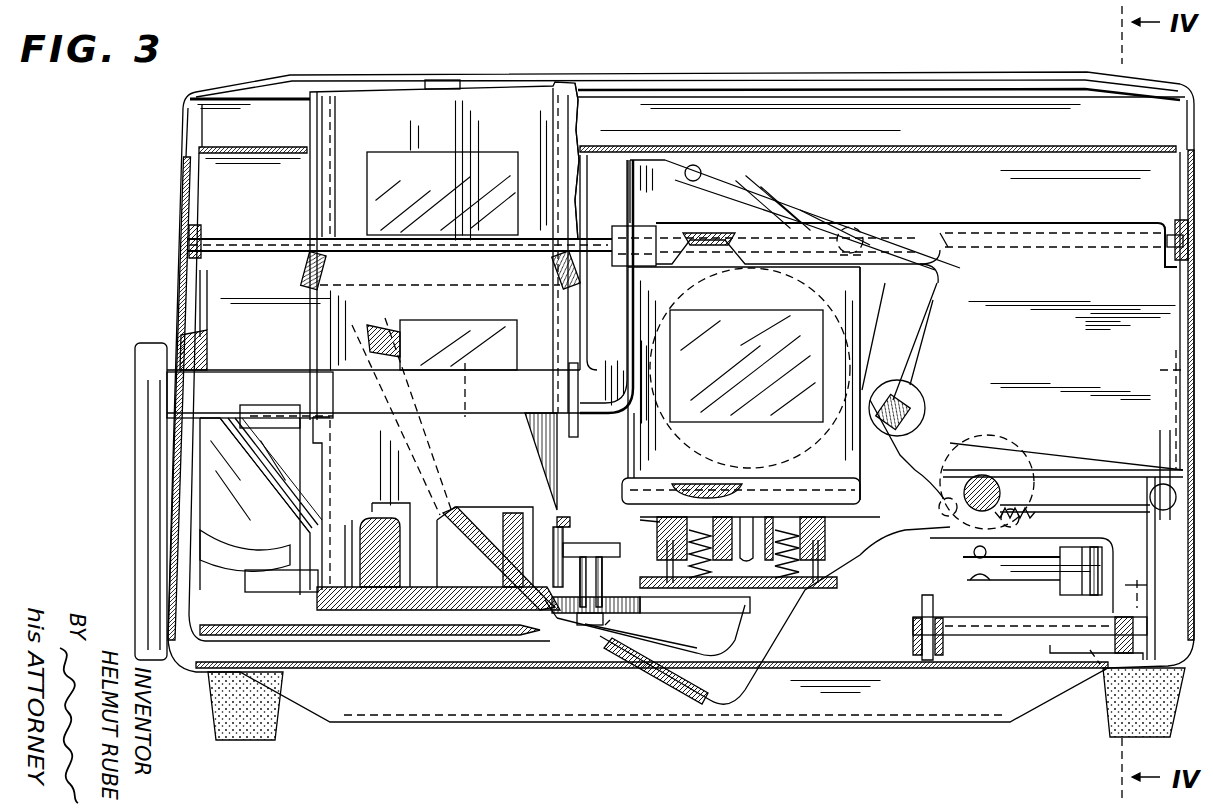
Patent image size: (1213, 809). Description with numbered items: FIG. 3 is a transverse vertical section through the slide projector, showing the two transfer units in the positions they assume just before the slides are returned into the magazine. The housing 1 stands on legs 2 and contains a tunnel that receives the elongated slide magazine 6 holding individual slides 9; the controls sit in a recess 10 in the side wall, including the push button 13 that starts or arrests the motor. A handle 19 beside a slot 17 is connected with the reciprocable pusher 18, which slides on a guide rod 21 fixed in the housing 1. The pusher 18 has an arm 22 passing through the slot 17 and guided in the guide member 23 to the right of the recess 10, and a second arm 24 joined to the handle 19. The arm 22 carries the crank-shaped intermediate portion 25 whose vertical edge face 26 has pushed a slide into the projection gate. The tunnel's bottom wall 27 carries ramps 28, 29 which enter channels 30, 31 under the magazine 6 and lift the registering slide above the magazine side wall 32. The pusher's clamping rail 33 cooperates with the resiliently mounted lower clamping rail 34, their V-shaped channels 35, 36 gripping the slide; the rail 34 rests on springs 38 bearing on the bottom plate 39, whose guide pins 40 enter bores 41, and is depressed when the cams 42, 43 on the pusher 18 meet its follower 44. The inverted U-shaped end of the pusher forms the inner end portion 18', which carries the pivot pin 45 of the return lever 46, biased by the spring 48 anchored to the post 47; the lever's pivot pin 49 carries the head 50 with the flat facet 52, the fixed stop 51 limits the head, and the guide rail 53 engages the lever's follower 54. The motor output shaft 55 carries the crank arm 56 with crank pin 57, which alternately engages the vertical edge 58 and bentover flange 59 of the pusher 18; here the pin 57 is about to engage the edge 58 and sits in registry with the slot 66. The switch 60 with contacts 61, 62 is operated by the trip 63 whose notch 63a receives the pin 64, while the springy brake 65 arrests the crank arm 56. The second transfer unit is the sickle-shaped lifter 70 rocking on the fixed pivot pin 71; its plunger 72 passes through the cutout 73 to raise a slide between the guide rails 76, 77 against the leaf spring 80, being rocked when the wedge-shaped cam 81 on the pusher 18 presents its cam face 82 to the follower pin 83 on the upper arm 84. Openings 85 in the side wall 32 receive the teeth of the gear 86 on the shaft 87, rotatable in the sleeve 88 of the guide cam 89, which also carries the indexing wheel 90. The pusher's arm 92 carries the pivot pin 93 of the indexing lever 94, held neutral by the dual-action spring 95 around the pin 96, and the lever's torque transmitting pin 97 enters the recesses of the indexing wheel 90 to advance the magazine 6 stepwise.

The housing 1 is at (245, 90).
The legs 2 is at (283, 700).
The slide magazine 6 is at (425, 413).
The slides 9 is at (510, 88).
The recess 10 is at (175, 437).
The push button 13 is at (215, 545).
The slot 17 is at (250, 470).
The pusher 18 is at (1045, 207).
The inner end portion 18' is at (988, 217).
The handle 19 is at (150, 343).
The guide rod 21 is at (250, 252).
The arm 22 is at (240, 372).
The guide member 23 is at (270, 410).
The second arm 24 is at (270, 630).
The intermediate portion 25 is at (612, 240).
The edge face 26 is at (632, 320).
The bottom wall 27 is at (300, 585).
The ramp 28 is at (385, 503).
The ramp 29 is at (420, 610).
The channel 30 is at (360, 512).
The channel 31 is at (398, 552).
The side wall 32 is at (563, 517).
The clamping rail 33 is at (688, 236).
The clamping rail 34 is at (650, 480).
The V-shaped channel 35 is at (705, 262).
The V-shaped channel 36 is at (707, 484).
The helical expansion springs 38 is at (740, 500).
The bottom plate 39 is at (820, 592).
The guide pins 40 is at (830, 580).
The guide bores 41 is at (826, 550).
The cam 42 is at (930, 527).
The cam 43 is at (1100, 470).
The follower 44 is at (770, 595).
The pivot pin 45 is at (920, 480).
The return lever 46 is at (900, 460).
The post 47 is at (1030, 512).
The spring 48 is at (1000, 493).
The pivot pin 49 is at (895, 380).
The head 50 is at (920, 395).
The stop 51 is at (568, 387).
The facet 52 is at (832, 405).
The guide rail 53 is at (858, 500).
The follower 54 is at (925, 545).
The output shaft 55 is at (975, 470).
The crank arm 56 is at (1157, 548).
The crank pin 57 is at (1150, 496).
The vertical edge 58 is at (1160, 572).
The bentover flange 59 is at (1160, 368).
The electric switch 60 is at (1060, 590).
The contact 61 is at (985, 580).
The contact 62 is at (1010, 582).
The trip 63 is at (975, 460).
The notch 63a is at (972, 553).
The pin 64 is at (968, 578).
The brake 65 is at (1168, 470).
The slot 66 is at (1085, 470).
The lifter 70 is at (945, 270).
The pivot pin 71 is at (858, 235).
The plunger 72 is at (408, 346).
The cutout 73 is at (475, 510).
The guide rail 76 is at (578, 128).
The guide rail 77 is at (317, 186).
The leaf spring 80 is at (440, 80).
The cam 81 is at (648, 160).
The cam face 82 is at (770, 190).
The follower pin 83 is at (695, 165).
The upper arm 84 is at (815, 205).
The openings 85 is at (585, 543).
The gear 86 is at (590, 557).
The shaft 87 is at (545, 610).
The sleeve 88 is at (652, 521).
The guide cam 89 is at (645, 588).
The indexing wheel 90 is at (603, 612).
The arm 92 is at (1140, 615).
The pivot pin 93 is at (1105, 670).
The indexing lever 94 is at (1020, 637).
The dual-action spring 95 is at (1050, 655).
The pin 96 is at (1160, 672).
The torque transmitting pin 97 is at (912, 640).